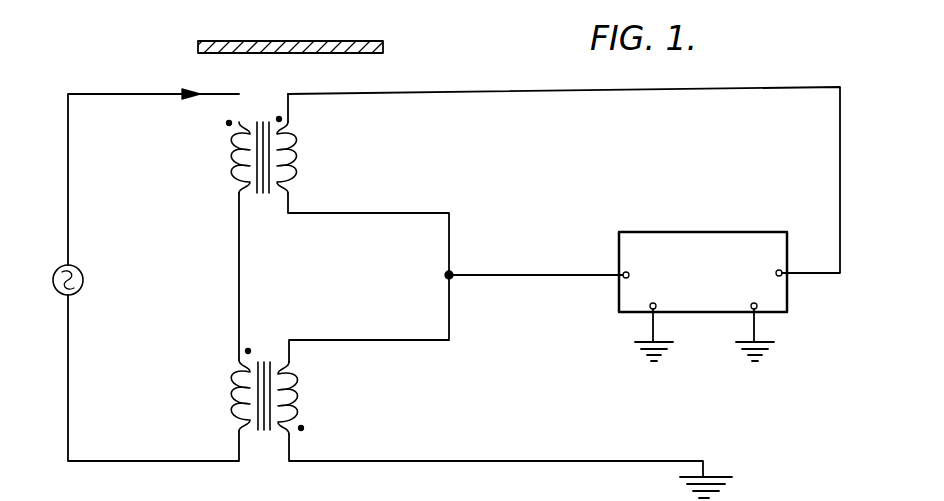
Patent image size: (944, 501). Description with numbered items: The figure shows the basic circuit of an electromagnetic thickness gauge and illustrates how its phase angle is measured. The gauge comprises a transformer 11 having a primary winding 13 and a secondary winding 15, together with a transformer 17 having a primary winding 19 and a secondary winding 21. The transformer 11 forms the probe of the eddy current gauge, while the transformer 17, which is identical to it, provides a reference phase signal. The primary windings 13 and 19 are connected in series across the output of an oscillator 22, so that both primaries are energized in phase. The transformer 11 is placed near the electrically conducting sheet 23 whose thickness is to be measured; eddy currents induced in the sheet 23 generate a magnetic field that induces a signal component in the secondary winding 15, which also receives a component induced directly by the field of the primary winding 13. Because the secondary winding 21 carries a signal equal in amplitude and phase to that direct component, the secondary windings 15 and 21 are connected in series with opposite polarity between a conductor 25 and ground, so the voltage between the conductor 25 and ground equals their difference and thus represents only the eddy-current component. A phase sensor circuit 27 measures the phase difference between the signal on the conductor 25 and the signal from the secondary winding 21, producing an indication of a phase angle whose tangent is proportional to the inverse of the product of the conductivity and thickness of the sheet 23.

The transformer 11 is at (265, 194).
The primary winding 13 is at (237, 163).
The secondary winding 15 is at (297, 162).
The transformer 17 is at (264, 430).
The primary winding 19 is at (237, 393).
The secondary winding 21 is at (299, 380).
The oscillator 22 is at (88, 272).
The electrically conducting sheet 23 is at (238, 54).
The conductor 25 is at (427, 92).
The phase sensor circuit 27 is at (655, 232).